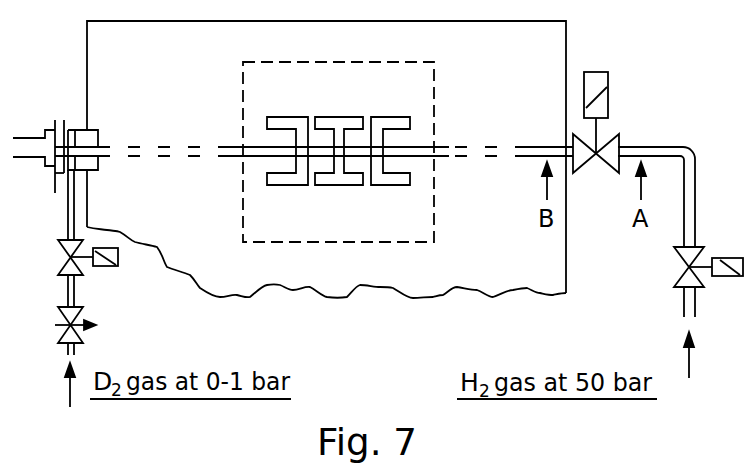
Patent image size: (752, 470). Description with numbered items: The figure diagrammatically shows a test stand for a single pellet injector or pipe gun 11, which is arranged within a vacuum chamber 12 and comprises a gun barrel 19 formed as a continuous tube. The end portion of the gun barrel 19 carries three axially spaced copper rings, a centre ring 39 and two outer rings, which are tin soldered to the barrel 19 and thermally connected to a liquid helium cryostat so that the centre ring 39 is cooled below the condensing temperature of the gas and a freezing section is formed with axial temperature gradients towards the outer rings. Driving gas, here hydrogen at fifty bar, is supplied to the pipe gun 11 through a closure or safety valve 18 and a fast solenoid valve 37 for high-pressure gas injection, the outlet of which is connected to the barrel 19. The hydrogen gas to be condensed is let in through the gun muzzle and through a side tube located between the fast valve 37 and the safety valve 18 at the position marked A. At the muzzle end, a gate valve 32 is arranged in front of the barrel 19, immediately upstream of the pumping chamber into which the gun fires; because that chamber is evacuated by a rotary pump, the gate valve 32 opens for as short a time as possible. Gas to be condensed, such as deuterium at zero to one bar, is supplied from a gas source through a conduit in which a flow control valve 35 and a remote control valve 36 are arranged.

The vacuum chamber 12 is at (87, 72).
The gate valve 32 is at (55, 173).
The gun barrel 19 is at (445, 150).
The pipe gun 11 is at (552, 150).
The solenoid valve 37 is at (609, 95).
The closure valve 18 is at (676, 274).
The remote control valve 36 is at (63, 275).
The flow control valve 35 is at (63, 343).
The centre ring 39 is at (337, 185).